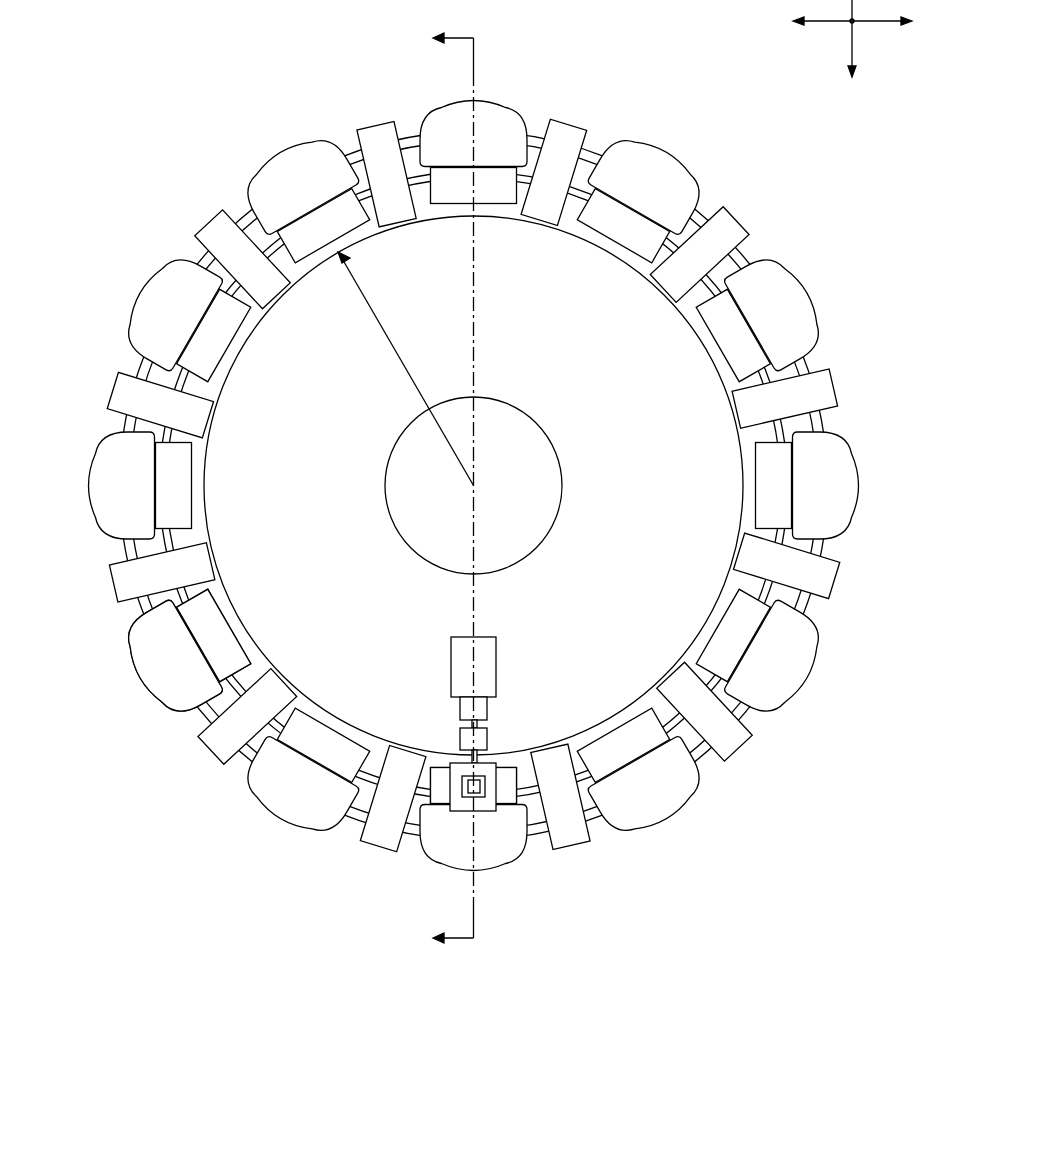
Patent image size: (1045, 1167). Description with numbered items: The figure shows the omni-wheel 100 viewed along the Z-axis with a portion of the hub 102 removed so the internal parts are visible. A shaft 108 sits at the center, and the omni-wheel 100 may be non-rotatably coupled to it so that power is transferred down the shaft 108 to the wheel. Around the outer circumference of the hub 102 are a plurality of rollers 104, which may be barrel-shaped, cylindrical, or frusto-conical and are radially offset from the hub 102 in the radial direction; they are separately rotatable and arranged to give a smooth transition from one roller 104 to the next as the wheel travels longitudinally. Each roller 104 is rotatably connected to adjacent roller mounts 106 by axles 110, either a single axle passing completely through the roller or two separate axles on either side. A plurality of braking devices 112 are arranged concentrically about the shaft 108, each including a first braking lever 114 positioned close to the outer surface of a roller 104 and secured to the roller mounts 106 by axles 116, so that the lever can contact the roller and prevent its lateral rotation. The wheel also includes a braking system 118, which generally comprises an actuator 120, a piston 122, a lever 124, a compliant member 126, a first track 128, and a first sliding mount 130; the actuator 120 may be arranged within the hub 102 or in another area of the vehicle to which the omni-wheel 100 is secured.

The omni-wheel 100 is at (129, 110).
The hub 102 is at (745, 452).
The rollers 104 is at (860, 485).
The roller mounts 106 is at (840, 388).
The shaft 108 is at (563, 478).
The axles 110 is at (828, 551).
The braking devices 112 is at (237, 623).
The first braking lever 114 is at (507, 806).
The axles 116 is at (248, 680).
The braking system 118 is at (490, 685).
The actuator 120 is at (452, 650).
The piston 122 is at (458, 705).
The lever 124 is at (480, 723).
The compliant member 126 is at (511, 740).
The first track 128 is at (470, 800).
The first sliding mount 130 is at (449, 790).